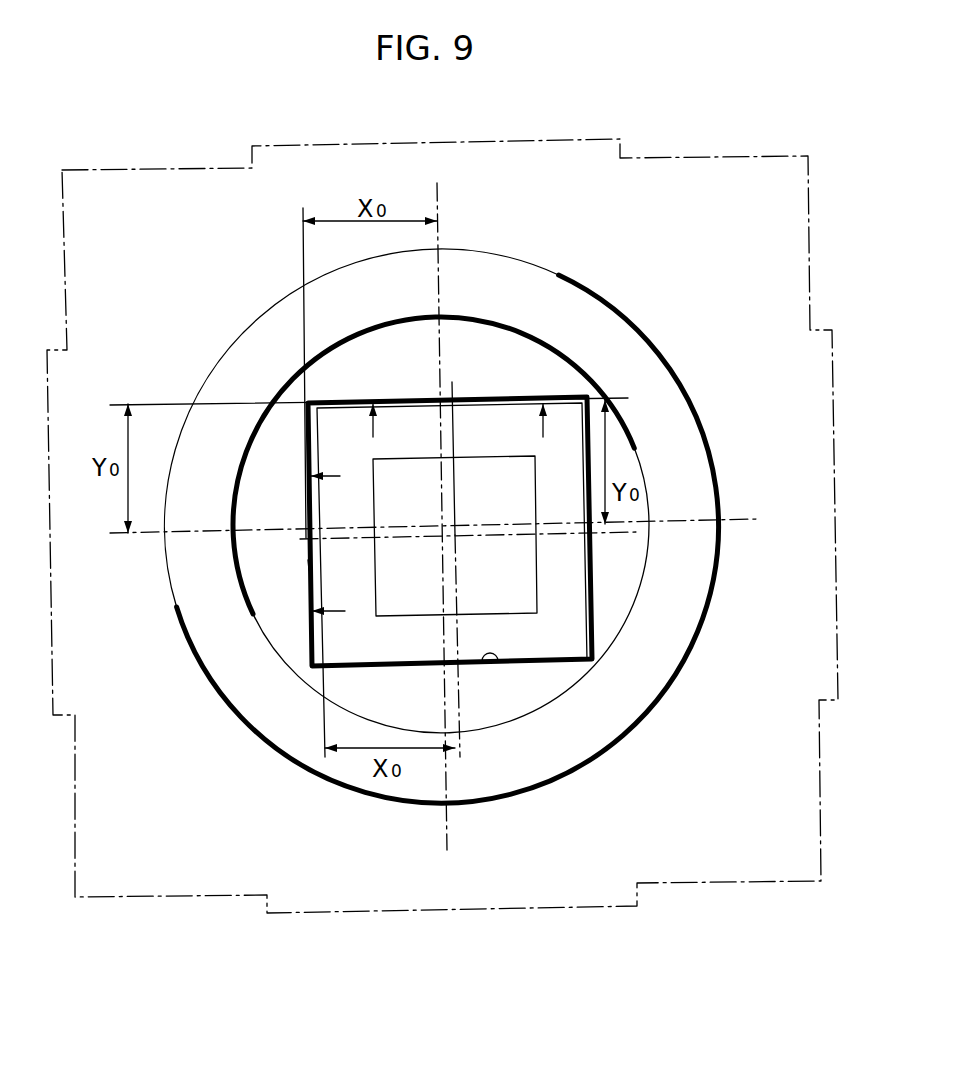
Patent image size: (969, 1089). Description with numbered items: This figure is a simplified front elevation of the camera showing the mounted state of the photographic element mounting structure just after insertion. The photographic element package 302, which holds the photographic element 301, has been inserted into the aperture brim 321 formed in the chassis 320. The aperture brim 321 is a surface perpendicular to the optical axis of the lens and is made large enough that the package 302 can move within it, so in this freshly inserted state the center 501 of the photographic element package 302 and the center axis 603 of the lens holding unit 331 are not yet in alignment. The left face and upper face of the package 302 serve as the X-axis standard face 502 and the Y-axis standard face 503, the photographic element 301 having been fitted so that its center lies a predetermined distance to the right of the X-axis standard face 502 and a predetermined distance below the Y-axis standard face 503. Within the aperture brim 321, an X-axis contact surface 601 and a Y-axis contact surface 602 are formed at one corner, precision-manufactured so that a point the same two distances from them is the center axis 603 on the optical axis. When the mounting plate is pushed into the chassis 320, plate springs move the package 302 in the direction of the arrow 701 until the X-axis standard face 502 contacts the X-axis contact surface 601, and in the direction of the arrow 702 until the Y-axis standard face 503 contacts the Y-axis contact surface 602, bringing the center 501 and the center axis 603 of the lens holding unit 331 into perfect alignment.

The chassis 320 is at (608, 137).
The lens holding unit 331 is at (657, 397).
The photographic element package 302 is at (668, 700).
The photographic element 301 is at (538, 582).
The aperture brim 321 is at (497, 667).
The center of the photographic element package 501 is at (455, 543).
The X-axis standard face 502 is at (316, 593).
The Y-axis standard face 503 is at (508, 397).
The X-axis contact surface 601 is at (308, 565).
The Y-axis contact surface 602 is at (472, 397).
The center axis of the lens holding unit 603 is at (440, 525).
The arrow 701 is at (340, 477).
The arrow 702 is at (372, 428).